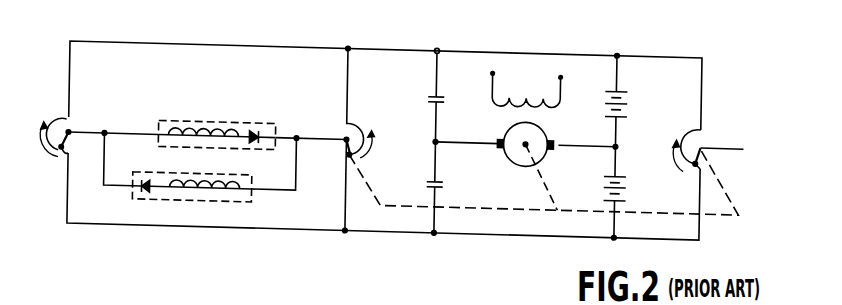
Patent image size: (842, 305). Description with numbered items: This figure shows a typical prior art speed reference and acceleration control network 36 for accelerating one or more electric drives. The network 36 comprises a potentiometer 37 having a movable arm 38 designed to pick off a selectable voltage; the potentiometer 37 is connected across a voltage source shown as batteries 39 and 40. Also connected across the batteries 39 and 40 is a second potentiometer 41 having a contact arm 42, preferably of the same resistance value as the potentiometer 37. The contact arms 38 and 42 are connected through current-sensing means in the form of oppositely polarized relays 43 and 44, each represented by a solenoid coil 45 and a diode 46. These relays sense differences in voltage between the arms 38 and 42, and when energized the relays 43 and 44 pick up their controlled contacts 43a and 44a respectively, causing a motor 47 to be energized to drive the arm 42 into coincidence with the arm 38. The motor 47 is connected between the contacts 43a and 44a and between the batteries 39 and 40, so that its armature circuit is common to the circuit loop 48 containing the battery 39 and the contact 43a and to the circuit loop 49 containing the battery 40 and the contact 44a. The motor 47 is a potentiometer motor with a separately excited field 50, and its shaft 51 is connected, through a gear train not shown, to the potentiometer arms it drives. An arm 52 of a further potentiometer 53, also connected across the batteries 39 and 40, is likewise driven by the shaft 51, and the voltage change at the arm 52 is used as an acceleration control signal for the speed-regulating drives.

The speed reference and acceleration control network 36 is at (257, 36).
The potentiometer 37 is at (62, 113).
The movable arm 38 is at (63, 162).
The battery 39 is at (631, 86).
The battery 40 is at (627, 170).
The second potentiometer 41 is at (358, 121).
The contact arm 42 is at (350, 153).
The polarized relay 43 is at (220, 119).
The controlled contact 43a is at (446, 92).
The polarized relay 44 is at (192, 191).
The controlled contact 44a is at (449, 172).
The solenoid coil 45 is at (182, 128).
The diode 46 is at (260, 124).
The motor 47 is at (544, 117).
The circuit loop 48 is at (452, 141).
The circuit loop 49 is at (525, 162).
The separately excited field 50 is at (565, 79).
The shaft 51 is at (557, 165).
The arm 52 is at (696, 153).
The potentiometer 53 is at (699, 111).